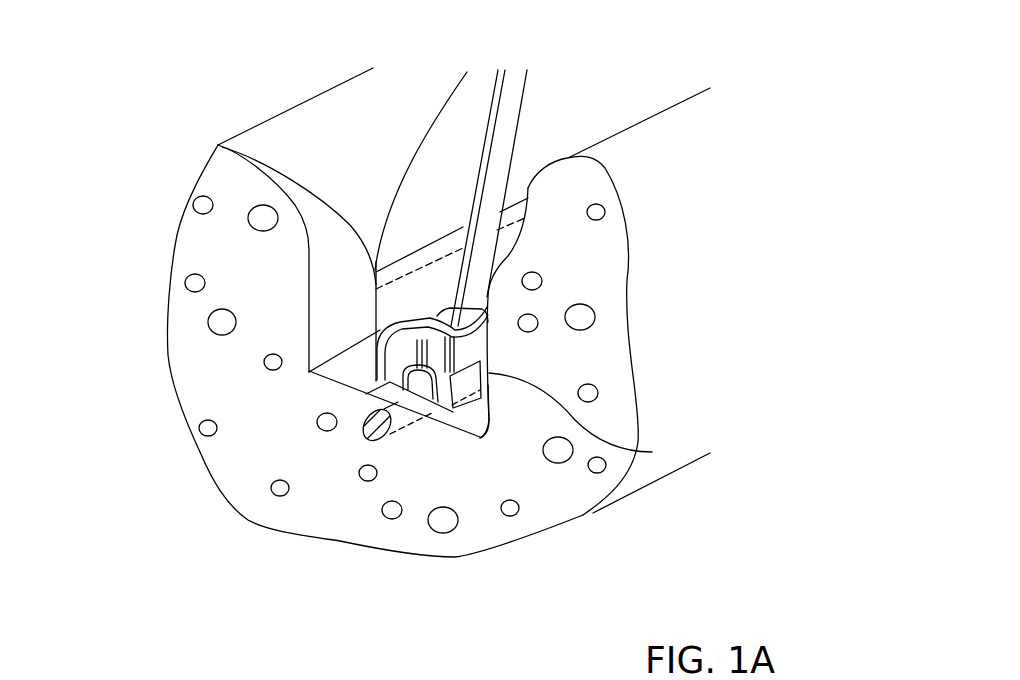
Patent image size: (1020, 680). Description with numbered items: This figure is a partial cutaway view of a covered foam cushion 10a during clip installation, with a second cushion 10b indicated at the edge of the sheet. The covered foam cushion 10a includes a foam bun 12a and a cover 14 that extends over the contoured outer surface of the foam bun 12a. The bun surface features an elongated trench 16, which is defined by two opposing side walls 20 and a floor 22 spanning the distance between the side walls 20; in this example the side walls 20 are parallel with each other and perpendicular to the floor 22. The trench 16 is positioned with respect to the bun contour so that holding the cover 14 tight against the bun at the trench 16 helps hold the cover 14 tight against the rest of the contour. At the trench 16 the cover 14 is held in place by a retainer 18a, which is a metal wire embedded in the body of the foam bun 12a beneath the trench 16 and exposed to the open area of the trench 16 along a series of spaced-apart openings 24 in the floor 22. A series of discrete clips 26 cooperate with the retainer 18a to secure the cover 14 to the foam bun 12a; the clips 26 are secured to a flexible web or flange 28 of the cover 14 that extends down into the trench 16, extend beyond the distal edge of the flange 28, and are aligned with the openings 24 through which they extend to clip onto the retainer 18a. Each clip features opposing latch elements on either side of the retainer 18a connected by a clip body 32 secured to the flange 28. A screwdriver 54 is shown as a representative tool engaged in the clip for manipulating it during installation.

The covered foam cushion 10a is at (136, 34).
The blade holder assembly (second) 10b is at (136, 672).
The foam bun 12a is at (280, 421).
The cover 14 is at (422, 137).
The elongated trench 16 is at (338, 297).
The retainer 18a is at (360, 428).
The side walls 20 is at (307, 240).
The floor 22 is at (436, 412).
The openings 24 is at (480, 438).
The clips 26 is at (586, 421).
The flexible web (flange) 28 is at (377, 330).
The clip body 32 is at (430, 317).
The screwdriver 54 is at (498, 142).